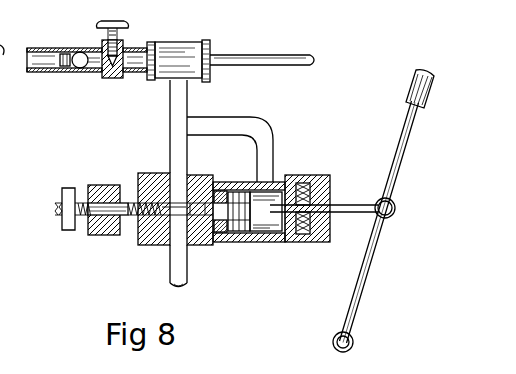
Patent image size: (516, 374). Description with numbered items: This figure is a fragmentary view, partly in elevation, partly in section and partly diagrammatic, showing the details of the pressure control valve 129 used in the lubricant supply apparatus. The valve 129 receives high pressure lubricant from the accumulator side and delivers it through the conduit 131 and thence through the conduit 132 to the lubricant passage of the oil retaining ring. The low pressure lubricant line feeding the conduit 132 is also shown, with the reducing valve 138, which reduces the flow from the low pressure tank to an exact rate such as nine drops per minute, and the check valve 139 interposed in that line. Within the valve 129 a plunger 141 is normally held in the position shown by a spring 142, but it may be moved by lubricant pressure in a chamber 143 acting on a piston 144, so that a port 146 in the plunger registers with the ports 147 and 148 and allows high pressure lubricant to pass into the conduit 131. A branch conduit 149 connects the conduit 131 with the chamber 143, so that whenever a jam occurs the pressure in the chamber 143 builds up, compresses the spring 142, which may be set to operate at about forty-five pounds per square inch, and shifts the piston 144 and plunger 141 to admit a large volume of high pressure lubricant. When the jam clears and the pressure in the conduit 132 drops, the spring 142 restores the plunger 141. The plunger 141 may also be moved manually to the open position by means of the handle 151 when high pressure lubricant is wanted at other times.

The pressure control valve 129 is at (145, 224).
The conduit 131 is at (170, 100).
The conduit 132 is at (288, 56).
The reducing valve 138 is at (122, 37).
The check valve 139 is at (80, 49).
The plunger 141 is at (213, 244).
The spring 142 is at (128, 236).
The chamber 143 is at (278, 222).
The piston 144 is at (248, 192).
The port 146 is at (188, 207).
The port 147 is at (172, 250).
The port 148 is at (175, 163).
The branch conduit 149 is at (274, 152).
The handle 151 is at (412, 134).